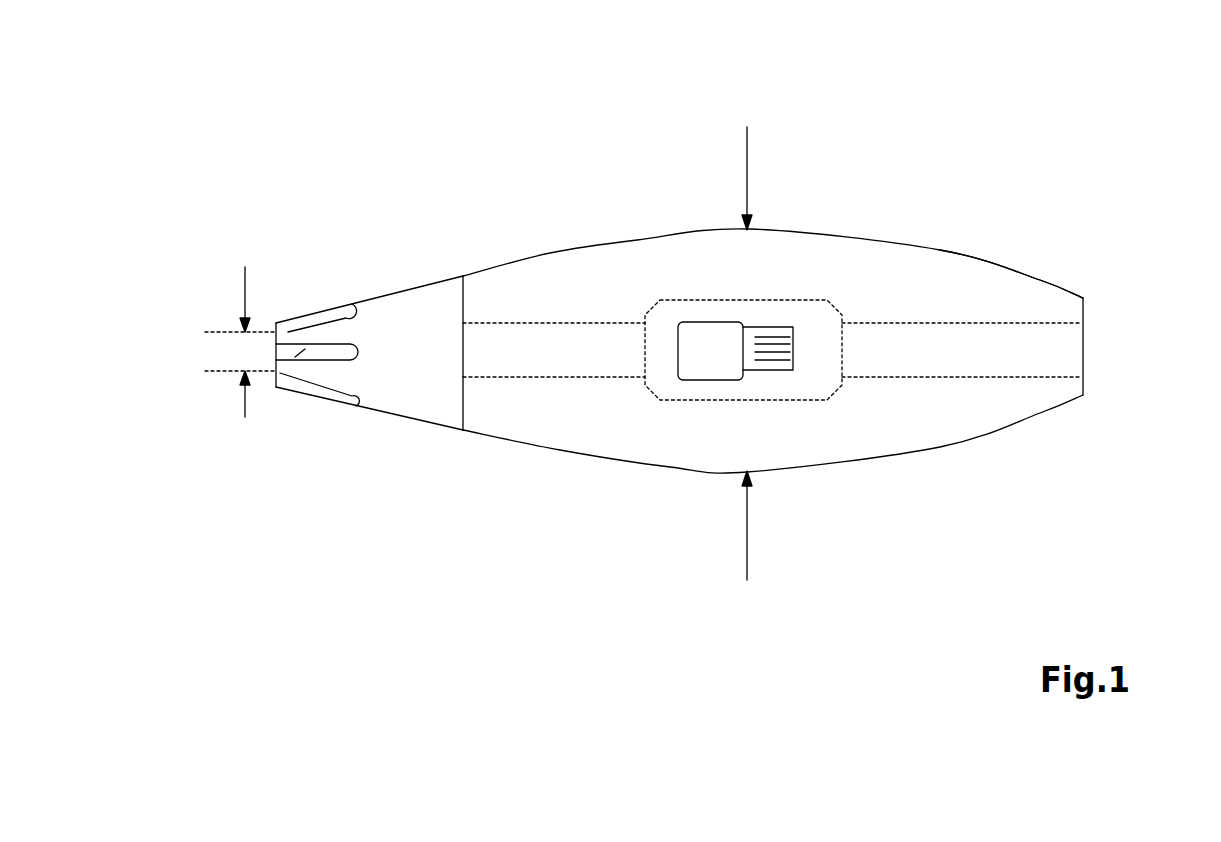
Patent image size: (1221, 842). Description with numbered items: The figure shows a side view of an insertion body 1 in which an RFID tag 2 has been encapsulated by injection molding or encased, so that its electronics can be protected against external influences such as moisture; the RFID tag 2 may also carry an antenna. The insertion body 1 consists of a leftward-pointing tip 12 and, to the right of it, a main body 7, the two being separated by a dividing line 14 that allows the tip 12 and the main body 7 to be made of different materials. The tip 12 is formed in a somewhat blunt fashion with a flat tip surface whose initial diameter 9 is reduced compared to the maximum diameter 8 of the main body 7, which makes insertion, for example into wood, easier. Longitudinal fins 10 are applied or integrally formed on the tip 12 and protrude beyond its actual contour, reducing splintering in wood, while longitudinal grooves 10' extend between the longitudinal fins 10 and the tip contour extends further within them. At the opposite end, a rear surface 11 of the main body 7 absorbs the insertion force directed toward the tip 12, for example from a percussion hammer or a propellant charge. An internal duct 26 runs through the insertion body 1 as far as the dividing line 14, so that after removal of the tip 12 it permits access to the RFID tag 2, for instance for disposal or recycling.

The insertion body 1 is at (936, 122).
The RFID tag 2 is at (707, 360).
The main body 7 is at (980, 290).
The maximum diameter 8 is at (747, 170).
The initial diameter 9 is at (242, 295).
The longitudinal fins 10 is at (294, 420).
The longitudinal grooves 10' is at (312, 268).
The rear surface 11 is at (1083, 347).
The tip 12 is at (433, 310).
The dividing line 14 is at (470, 380).
The internal duct 26 is at (558, 380).